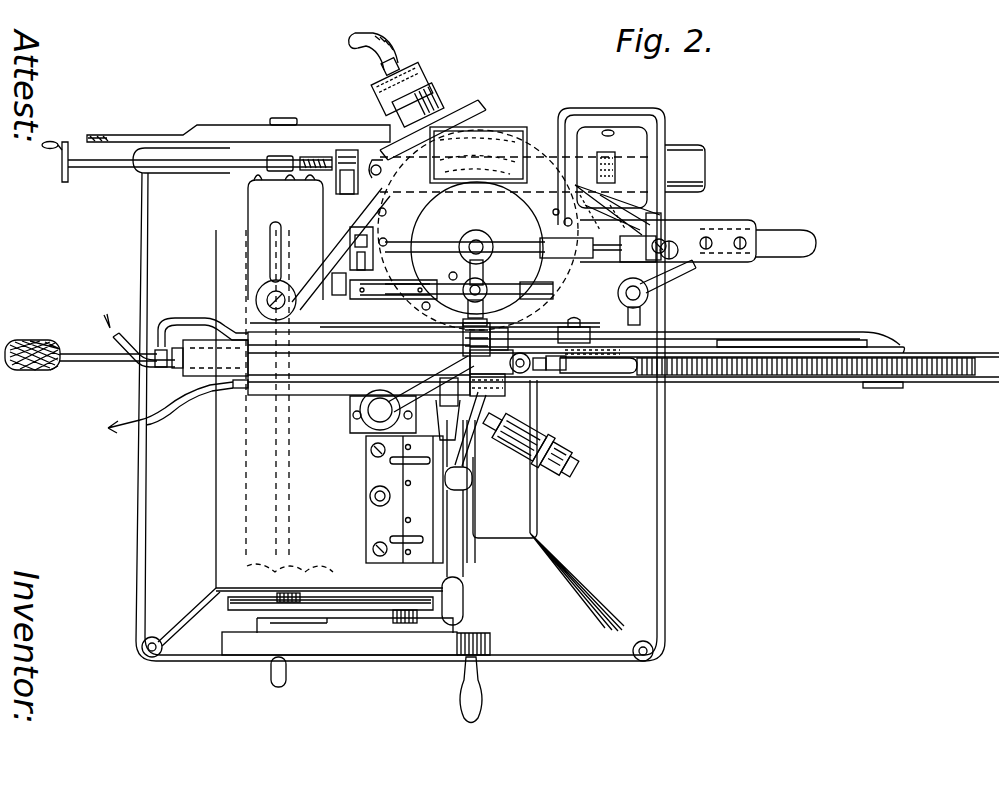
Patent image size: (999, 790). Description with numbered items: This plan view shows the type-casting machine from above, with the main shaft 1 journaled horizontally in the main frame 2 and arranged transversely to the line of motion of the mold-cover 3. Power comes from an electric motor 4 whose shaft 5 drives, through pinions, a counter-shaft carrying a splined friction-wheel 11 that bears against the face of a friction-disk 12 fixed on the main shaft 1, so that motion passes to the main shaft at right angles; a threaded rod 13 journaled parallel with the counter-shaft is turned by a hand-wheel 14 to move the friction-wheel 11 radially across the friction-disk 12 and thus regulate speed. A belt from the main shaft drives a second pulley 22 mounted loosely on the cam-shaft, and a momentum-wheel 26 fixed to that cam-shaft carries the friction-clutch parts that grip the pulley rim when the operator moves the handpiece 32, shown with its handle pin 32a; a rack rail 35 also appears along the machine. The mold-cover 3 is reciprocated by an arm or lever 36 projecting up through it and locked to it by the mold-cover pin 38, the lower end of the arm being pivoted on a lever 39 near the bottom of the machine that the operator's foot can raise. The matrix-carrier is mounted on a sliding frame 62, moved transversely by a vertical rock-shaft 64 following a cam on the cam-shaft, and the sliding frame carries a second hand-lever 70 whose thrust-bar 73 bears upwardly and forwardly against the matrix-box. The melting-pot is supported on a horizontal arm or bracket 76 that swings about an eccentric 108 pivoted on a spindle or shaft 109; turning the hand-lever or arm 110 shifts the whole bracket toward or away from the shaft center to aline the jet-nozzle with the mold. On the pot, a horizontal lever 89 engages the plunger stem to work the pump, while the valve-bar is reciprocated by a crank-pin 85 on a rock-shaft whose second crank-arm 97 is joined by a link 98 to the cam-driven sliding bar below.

The main shaft 1 is at (280, 523).
The main frame 2 is at (399, 404).
The mold-cover 3 is at (467, 379).
The electric motor 4 is at (658, 124).
The shaft 5 is at (708, 167).
The friction-wheel 11 is at (340, 192).
The friction-disk 12 is at (238, 128).
The threaded rod 13 is at (122, 167).
The hand-wheel 14 is at (63, 169).
The second pulley 22 is at (343, 613).
The momentum-wheel 26 is at (356, 638).
The handpiece 32 is at (273, 685).
The handle pin 32a is at (490, 690).
The rack rail 35 is at (410, 362).
The arm or lever 36 is at (335, 355).
The mold-cover pin 38 is at (345, 396).
The lever 39 is at (88, 360).
The sliding frame 62 is at (404, 499).
The rock-shaft 64 is at (372, 504).
The second hand-lever 70 is at (452, 607).
The thrust-bar 73 is at (478, 440).
The arm or bracket 76 is at (319, 242).
The crank-pin 85 is at (469, 293).
The horizontal lever 89 is at (525, 250).
The second crank-arm 97 is at (390, 298).
The link 98 is at (339, 272).
The eccentric 108 is at (265, 290).
The spindle or shaft 109 is at (258, 303).
The hand-lever or arm 110 is at (272, 238).